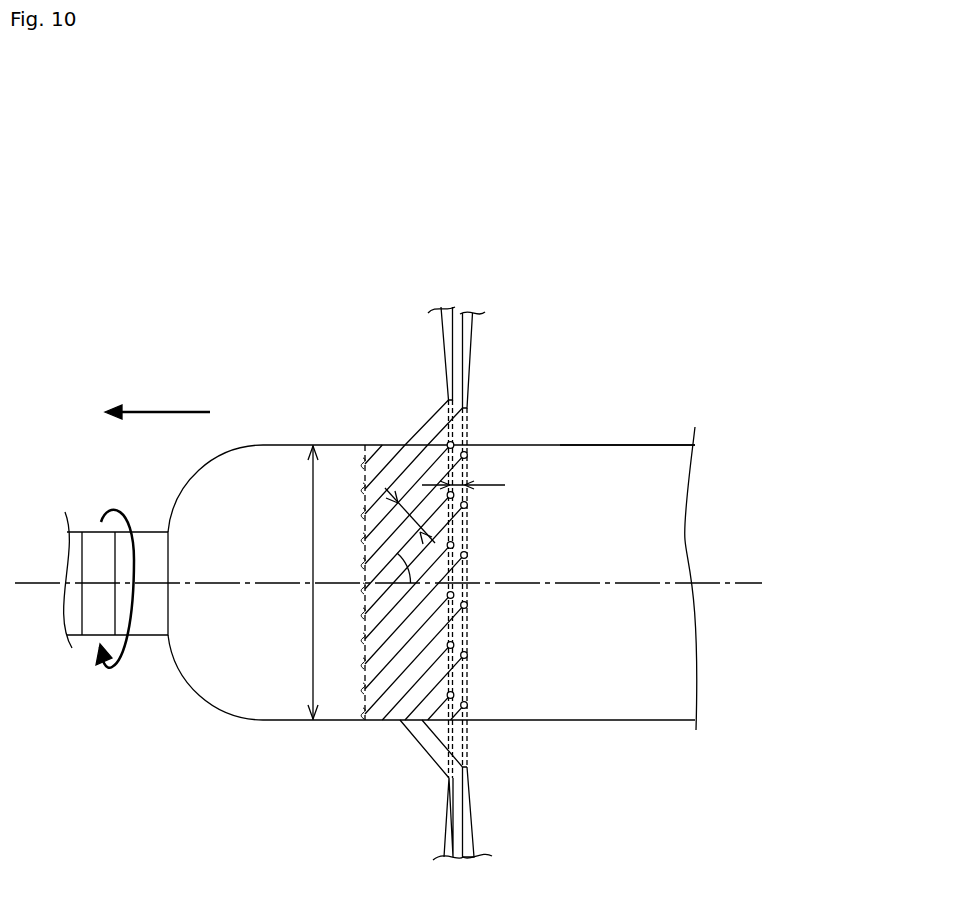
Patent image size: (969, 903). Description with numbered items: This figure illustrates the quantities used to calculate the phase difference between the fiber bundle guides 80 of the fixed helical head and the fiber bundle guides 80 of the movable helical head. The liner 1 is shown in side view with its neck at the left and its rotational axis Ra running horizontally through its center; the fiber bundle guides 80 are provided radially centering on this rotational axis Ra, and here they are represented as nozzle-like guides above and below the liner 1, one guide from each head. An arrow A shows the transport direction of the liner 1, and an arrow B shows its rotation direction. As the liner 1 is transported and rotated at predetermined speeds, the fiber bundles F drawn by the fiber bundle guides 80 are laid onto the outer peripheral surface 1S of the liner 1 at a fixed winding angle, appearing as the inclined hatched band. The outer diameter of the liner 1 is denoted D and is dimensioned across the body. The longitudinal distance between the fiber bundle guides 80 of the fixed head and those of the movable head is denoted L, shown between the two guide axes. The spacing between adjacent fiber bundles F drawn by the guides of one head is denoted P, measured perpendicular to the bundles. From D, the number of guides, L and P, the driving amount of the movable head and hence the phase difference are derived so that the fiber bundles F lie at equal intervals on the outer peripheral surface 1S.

The liner 1 is at (598, 430).
The outer peripheral surface 1S is at (651, 452).
The fiber bundle guide 80 is at (441, 345).
The fiber bundle F is at (423, 423).
The rotational axis Ra is at (743, 582).
The transport direction A is at (157, 400).
The rotation direction B is at (115, 570).
The outer diameter D is at (305, 582).
The distance between fiber bundle guides in the longitudinal direction L is at (463, 476).
The distance between fiber bundles P is at (410, 516).